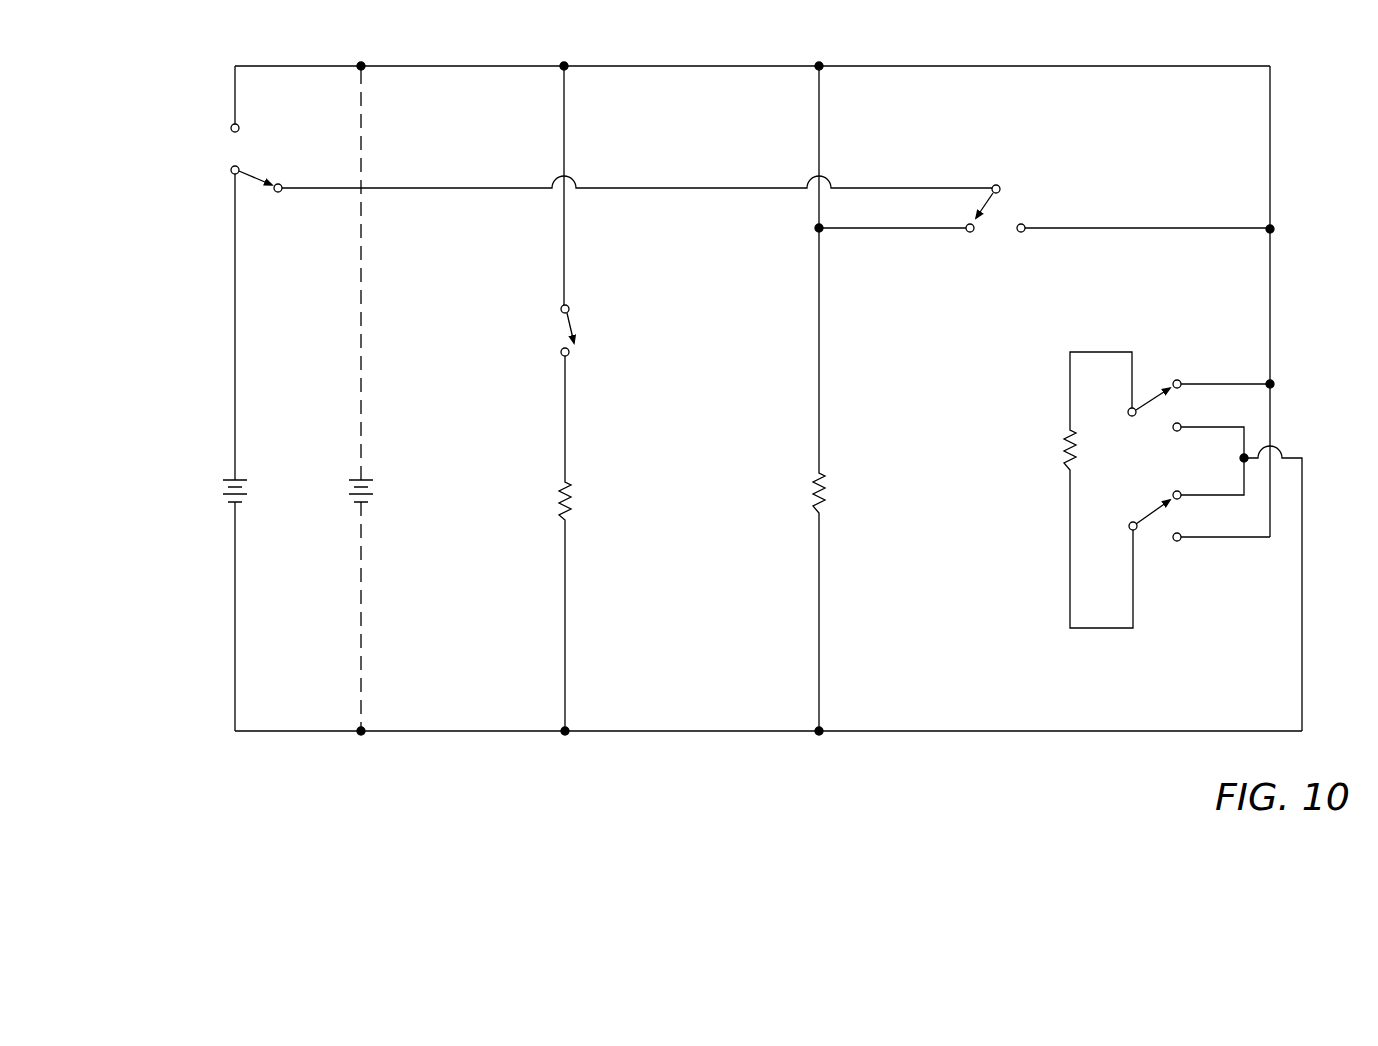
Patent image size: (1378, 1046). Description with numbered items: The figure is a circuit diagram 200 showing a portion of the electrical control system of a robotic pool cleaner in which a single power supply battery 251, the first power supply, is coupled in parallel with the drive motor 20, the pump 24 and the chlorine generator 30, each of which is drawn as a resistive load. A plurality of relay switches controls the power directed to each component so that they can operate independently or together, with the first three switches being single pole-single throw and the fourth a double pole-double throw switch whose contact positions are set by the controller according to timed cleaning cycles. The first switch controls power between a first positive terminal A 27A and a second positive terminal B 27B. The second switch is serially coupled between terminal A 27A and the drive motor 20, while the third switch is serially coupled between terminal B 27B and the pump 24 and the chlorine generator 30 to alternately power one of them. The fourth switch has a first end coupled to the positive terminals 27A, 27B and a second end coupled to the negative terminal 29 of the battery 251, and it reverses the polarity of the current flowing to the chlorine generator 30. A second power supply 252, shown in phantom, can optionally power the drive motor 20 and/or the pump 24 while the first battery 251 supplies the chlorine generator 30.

The circuit diagram 200 is at (514, 811).
The first positive terminal A 27A is at (1090, 66).
The second positive terminal B 27B is at (652, 188).
The first power supply battery 251 is at (233, 592).
The second power supply 252 is at (362, 592).
The drive motor 20 is at (563, 645).
The pump 24 is at (818, 636).
The chlorine generator 30 is at (1070, 545).
The negative terminal 29 is at (950, 735).